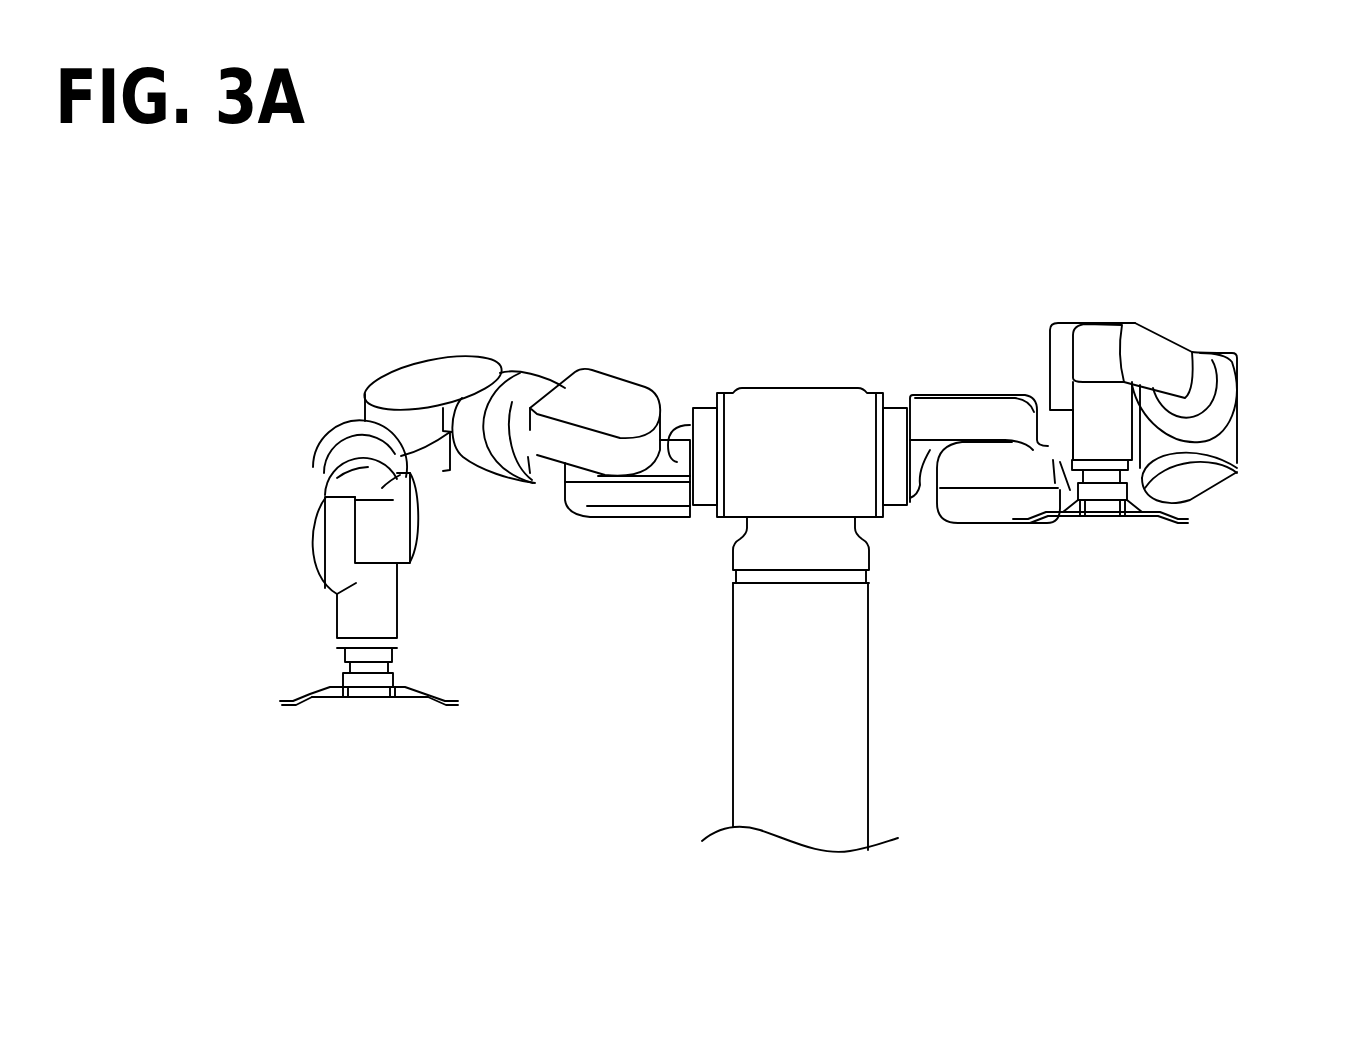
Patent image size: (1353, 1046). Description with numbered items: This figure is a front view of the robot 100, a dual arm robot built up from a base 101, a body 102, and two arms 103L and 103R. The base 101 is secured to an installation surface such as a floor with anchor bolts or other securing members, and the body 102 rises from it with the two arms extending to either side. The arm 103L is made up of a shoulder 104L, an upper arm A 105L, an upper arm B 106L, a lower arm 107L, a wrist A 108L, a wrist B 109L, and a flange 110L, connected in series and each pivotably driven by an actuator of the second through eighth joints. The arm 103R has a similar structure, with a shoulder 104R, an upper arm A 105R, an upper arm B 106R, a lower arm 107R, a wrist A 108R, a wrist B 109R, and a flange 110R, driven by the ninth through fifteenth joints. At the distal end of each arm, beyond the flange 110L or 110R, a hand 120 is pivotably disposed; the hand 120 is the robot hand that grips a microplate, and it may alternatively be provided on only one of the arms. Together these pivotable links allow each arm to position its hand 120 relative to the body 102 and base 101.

The robot 100 is at (862, 291).
The base 101 is at (850, 684).
The body 102 is at (795, 406).
The arm 103R is at (518, 338).
The arm 103L is at (1160, 308).
The shoulder 104R is at (631, 503).
The shoulder 104L is at (960, 410).
The upper arm A 105R is at (607, 392).
The upper arm A 105L is at (996, 512).
The upper arm B 106R is at (422, 380).
The upper arm B 106L is at (1197, 491).
The lower arm 107R is at (445, 466).
The lower arm 107L is at (1207, 366).
The wrist A 108R is at (403, 540).
The wrist A 108L is at (1100, 336).
The wrist B 109R is at (330, 548).
The wrist B 109L is at (1050, 342).
The flange 110R is at (390, 643).
The flange 110L is at (1123, 462).
The hand 120 is at (310, 673).